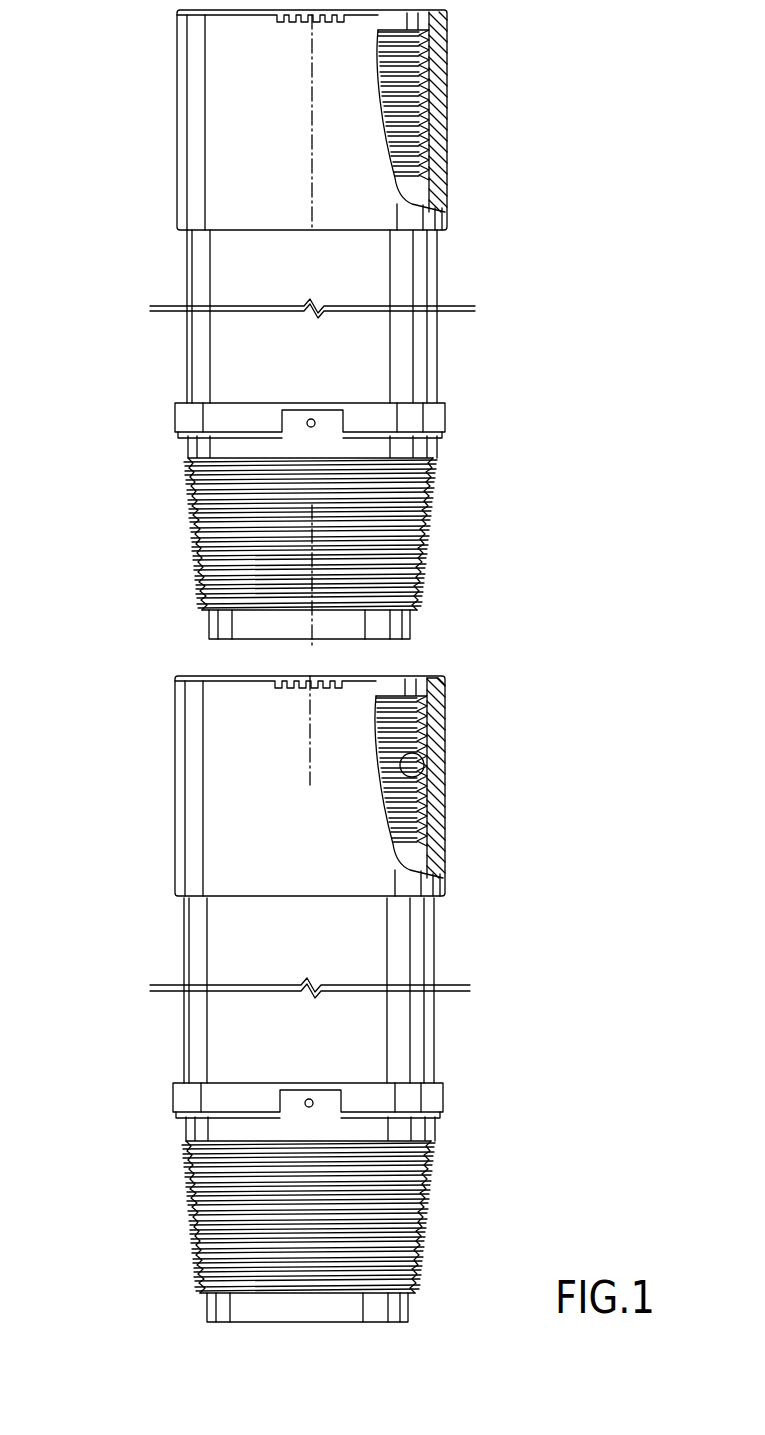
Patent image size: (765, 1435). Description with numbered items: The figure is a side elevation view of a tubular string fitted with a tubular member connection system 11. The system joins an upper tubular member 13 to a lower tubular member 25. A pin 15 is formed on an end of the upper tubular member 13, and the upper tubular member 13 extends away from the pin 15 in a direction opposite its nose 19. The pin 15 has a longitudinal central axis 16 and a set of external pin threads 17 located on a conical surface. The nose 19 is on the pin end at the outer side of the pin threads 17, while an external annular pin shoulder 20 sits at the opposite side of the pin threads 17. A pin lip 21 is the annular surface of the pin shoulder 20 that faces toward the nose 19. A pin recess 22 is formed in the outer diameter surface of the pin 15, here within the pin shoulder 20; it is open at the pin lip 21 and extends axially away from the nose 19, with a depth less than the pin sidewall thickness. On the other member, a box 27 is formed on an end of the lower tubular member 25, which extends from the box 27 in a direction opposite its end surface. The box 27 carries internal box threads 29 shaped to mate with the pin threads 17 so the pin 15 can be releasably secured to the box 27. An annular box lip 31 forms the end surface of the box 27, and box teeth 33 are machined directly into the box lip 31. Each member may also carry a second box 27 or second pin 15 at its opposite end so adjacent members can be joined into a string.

The tubular member connection system 11 is at (359, 666).
The upper tubular member 13 is at (203, 338).
The pin 15 is at (308, 879).
The longitudinal central axis 16 is at (311, 117).
The pin threads 17 is at (432, 522).
The nose 19 is at (408, 622).
The pin shoulder 20 is at (312, 402).
The pin lip 21 is at (180, 437).
The pin recess 22 is at (330, 420).
The lower tubular member 25 is at (210, 1030).
The box 27 is at (160, 154).
The box threads 29 is at (405, 778).
The box lip 31 is at (432, 685).
The box teeth 33 is at (292, 675).